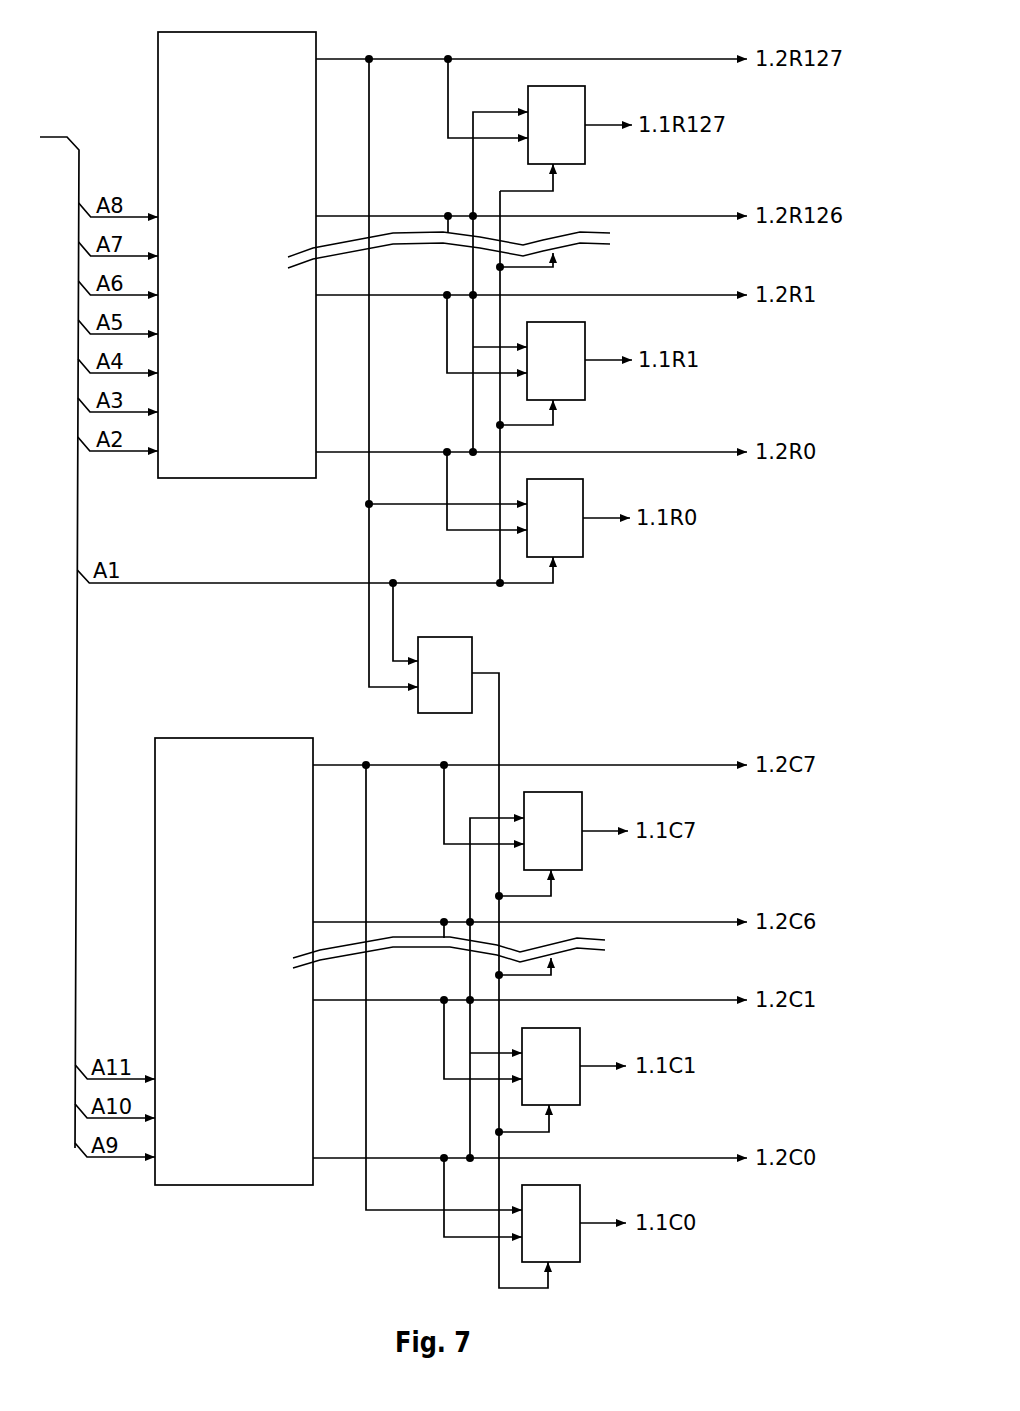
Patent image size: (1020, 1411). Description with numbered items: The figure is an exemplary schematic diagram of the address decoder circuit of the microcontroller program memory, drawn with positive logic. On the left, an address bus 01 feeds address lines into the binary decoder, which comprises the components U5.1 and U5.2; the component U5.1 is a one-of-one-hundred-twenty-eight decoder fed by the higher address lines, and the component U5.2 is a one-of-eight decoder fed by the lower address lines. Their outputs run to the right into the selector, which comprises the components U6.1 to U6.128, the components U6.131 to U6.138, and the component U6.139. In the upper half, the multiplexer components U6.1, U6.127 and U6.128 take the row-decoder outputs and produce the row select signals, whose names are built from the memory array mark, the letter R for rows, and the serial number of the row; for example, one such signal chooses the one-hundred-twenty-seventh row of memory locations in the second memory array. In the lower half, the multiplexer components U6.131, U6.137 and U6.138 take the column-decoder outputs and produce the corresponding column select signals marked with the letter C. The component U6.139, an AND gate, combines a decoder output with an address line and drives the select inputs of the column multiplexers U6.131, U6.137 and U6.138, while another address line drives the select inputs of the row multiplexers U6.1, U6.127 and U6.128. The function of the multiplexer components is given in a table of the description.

The address bus 01 is at (59, 627).
The binary decoder component U5.1 is at (237, 243).
The binary decoder component U5.2 is at (234, 950).
The selector component U6.1 is at (580, 113).
The selector component U6.127 is at (574, 349).
The selector component U6.128 is at (573, 506).
The selector component U6.131 is at (570, 819).
The selector component U6.137 is at (570, 1055).
The selector component U6.138 is at (570, 1212).
The selector component U6.139 is at (445, 663).